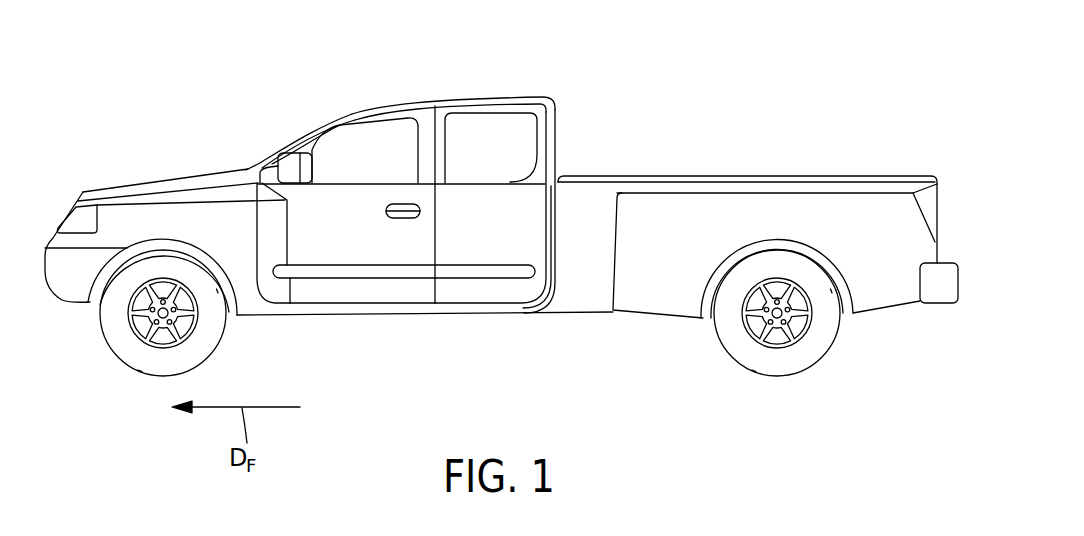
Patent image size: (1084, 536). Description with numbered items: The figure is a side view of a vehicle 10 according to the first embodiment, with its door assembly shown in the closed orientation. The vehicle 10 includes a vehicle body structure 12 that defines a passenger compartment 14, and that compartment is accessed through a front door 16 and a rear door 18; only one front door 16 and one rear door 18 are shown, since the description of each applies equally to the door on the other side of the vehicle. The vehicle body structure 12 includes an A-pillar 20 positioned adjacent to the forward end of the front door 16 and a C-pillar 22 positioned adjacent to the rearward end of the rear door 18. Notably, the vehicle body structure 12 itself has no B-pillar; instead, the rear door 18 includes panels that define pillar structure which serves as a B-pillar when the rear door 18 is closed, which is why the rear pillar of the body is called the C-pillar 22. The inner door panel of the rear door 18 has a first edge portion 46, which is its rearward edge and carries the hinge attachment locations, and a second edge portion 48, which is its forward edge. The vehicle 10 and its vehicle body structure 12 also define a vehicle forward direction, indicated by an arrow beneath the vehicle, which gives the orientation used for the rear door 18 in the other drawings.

The vehicle 10 is at (501, 200).
The vehicle body structure 12 is at (391, 104).
The passenger compartment 14 is at (358, 157).
The front door 16 is at (350, 288).
The rear door 18 is at (482, 278).
The A-pillar 20 is at (303, 130).
The C-pillar 22 is at (547, 145).
The first edge portion 46 is at (549, 220).
The second edge portion 48 is at (435, 245).